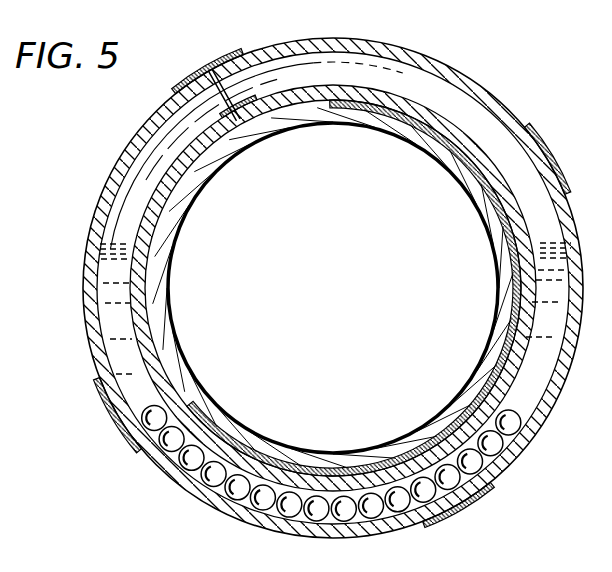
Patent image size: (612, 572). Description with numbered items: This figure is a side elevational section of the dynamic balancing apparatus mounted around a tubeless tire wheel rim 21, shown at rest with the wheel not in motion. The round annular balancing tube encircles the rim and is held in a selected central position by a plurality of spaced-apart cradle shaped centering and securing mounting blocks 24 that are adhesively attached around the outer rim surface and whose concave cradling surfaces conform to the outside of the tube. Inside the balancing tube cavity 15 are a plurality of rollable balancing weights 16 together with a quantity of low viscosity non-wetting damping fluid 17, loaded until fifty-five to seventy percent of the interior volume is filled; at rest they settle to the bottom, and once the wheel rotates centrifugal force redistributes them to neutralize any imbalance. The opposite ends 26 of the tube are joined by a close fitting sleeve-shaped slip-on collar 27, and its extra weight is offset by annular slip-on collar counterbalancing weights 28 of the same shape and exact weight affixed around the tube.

The balancing tube cavity 15 is at (611, 498).
The rollable balancing weights 16 is at (197, 494).
The low viscosity non-wetting damping fluid 17 is at (136, 370).
The wheel rim 21 is at (253, 150).
The cradle shaped centering and securing mounting blocks 24 is at (336, 102).
The opposite ends of balancing tube 26 is at (235, 86).
The slip-on collar 27 is at (222, 48).
The slip-on collar counterbalancing weights 28 is at (553, 153).